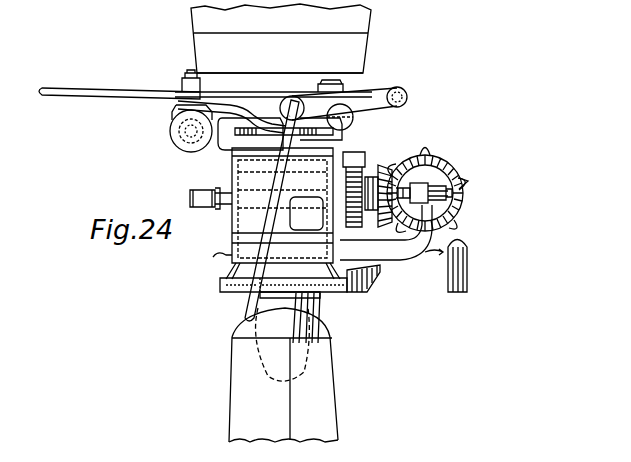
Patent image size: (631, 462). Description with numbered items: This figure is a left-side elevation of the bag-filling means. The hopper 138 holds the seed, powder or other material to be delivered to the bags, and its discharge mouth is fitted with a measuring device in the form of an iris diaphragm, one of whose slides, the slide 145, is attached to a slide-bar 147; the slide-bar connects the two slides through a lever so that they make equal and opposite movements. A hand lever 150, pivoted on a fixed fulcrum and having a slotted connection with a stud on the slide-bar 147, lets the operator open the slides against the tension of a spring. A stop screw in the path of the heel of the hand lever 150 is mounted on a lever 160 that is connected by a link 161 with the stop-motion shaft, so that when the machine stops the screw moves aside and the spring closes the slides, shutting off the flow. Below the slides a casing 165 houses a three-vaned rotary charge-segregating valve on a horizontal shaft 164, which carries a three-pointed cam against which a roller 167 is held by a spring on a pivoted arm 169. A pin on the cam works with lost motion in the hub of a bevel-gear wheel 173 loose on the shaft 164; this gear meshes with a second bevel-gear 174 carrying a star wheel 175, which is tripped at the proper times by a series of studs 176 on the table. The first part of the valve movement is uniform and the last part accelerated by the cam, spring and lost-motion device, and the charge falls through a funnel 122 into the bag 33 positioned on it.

The hopper 138 is at (355, 43).
The hand lever 150 is at (101, 88).
The casing 165 is at (250, 163).
The slide-bar 147 is at (228, 110).
The slide 145 is at (257, 130).
The lever 160 is at (377, 107).
The link 161 is at (260, 240).
The horizontal shaft 164 is at (223, 210).
The funnel 122 is at (297, 328).
The bag 33 is at (325, 383).
The roller 167 is at (357, 148).
The pivoted arm 169 is at (373, 161).
The bevel-gear wheel 173 is at (380, 227).
The second bevel-gear 174 is at (442, 162).
The star wheel 175 is at (472, 181).
The studs 176 is at (468, 273).